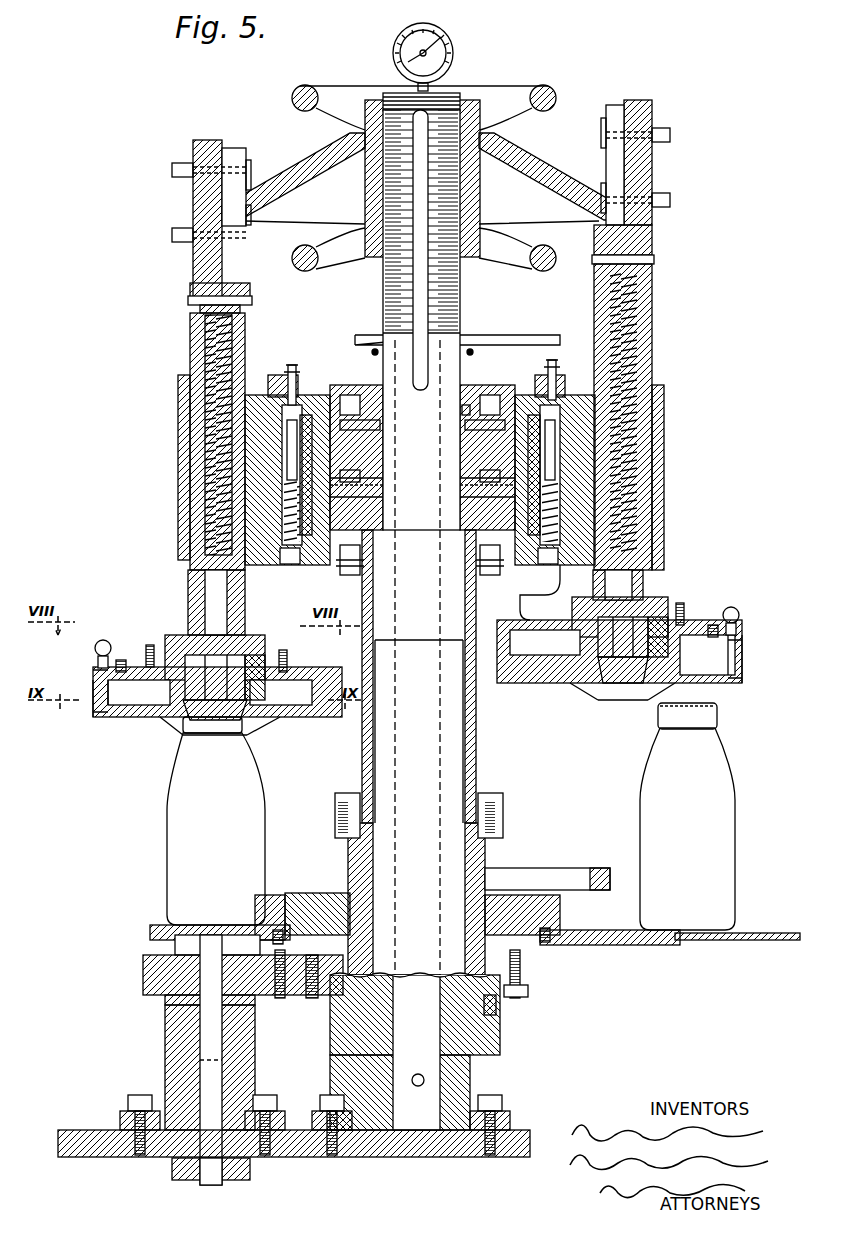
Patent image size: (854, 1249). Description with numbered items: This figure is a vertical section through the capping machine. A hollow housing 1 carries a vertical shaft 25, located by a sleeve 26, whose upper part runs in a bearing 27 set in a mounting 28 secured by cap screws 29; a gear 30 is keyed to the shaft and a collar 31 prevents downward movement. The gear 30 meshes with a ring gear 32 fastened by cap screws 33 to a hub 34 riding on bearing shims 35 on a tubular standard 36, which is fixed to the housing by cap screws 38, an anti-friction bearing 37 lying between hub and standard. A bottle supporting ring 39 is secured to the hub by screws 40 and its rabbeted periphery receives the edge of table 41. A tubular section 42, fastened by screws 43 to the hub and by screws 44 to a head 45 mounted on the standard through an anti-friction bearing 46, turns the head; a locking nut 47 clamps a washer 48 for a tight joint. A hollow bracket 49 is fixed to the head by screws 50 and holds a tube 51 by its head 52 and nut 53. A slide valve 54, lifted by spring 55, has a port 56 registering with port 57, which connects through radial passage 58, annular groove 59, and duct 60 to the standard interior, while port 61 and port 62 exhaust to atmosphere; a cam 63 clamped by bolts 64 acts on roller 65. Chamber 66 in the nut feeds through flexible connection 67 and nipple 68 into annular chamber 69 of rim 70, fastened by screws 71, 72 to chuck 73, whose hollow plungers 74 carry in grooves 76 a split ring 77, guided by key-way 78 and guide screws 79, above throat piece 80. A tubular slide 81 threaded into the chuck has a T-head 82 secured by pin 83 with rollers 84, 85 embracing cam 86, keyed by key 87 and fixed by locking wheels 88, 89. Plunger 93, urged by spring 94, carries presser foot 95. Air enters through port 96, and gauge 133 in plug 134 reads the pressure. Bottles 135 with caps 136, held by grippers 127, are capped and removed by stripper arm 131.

The housing 1 is at (82, 1136).
The vertical shaft 25 is at (210, 1080).
The sleeve 26 is at (250, 1170).
The bearing 27 is at (165, 1000).
The mounting 28 is at (165, 1040).
The cap screws 29 is at (138, 1098).
The gear 30 is at (143, 975).
The collar 31 is at (175, 945).
The ring gear 32 is at (280, 1000).
The cap screws 33 is at (312, 1000).
The hub 34 is at (330, 900).
The bearing shims 35 is at (494, 1008).
The tubular standard 36 is at (398, 1045).
The anti-friction bearing 37 is at (488, 863).
The cap screws 38 is at (333, 1097).
The bottle supporting ring 39 is at (155, 928).
The screws 40 is at (279, 930).
The table 41 is at (742, 940).
The tubular section 42 is at (478, 750).
The screws 43 is at (335, 800).
The screws 44 is at (484, 563).
The head 45 is at (396, 436).
The anti-friction bearing 46 is at (463, 448).
The locking nut 47 is at (498, 372).
The washer 48 is at (462, 410).
The hollow bracket 49 is at (178, 385).
The screws 50 is at (352, 483).
The tube 51 is at (275, 520).
The head 52 is at (275, 395).
The nut 53 is at (300, 565).
The slide valve 54 is at (292, 395).
The expansion coil spring 55 is at (285, 535).
The port 56 is at (220, 490).
The port 57 is at (290, 480).
The radial passage 58 is at (386, 510).
The annular groove 59 is at (395, 495).
The duct 60 is at (420, 472).
The port 61 is at (270, 450).
The port 62 is at (280, 460).
The cam 63 is at (500, 345).
The bolts 64 is at (372, 351).
The roller 65 is at (292, 365).
The chamber 66 is at (285, 565).
The flexible connection 67 is at (552, 612).
The nipple 68 is at (95, 650).
The annular chamber 69 is at (130, 717).
The rim 70 is at (95, 708).
The screws 71 is at (100, 718).
The screws 72 is at (121, 660).
The chuck 73 is at (185, 636).
The hollow plungers 74 is at (720, 688).
The grooves 76 is at (190, 712).
The split ring 77 is at (248, 698).
The key-way 78 is at (423, 664).
The guide screws 79 is at (150, 645).
The throat piece 80 is at (186, 720).
The tubular slide 81 is at (190, 345).
The T-head 82 is at (193, 213).
The pin 83 is at (190, 299).
The upper roller 84 is at (240, 150).
The lower roller 85 is at (243, 246).
The cam 86 is at (300, 190).
The key 87 is at (482, 180).
The locking wheel 88 is at (535, 94).
The locking wheel 89 is at (512, 252).
The plunger 93 is at (205, 592).
The expansion coil spring 94 is at (205, 415).
The presser foot 95 is at (612, 660).
The port 96 is at (418, 1087).
The grippers 127 is at (275, 900).
The stripper arm 131 is at (596, 876).
The gauge 133 is at (396, 44).
The plug 134 is at (440, 95).
The bottles 135 is at (748, 818).
The caps 136 is at (230, 727).